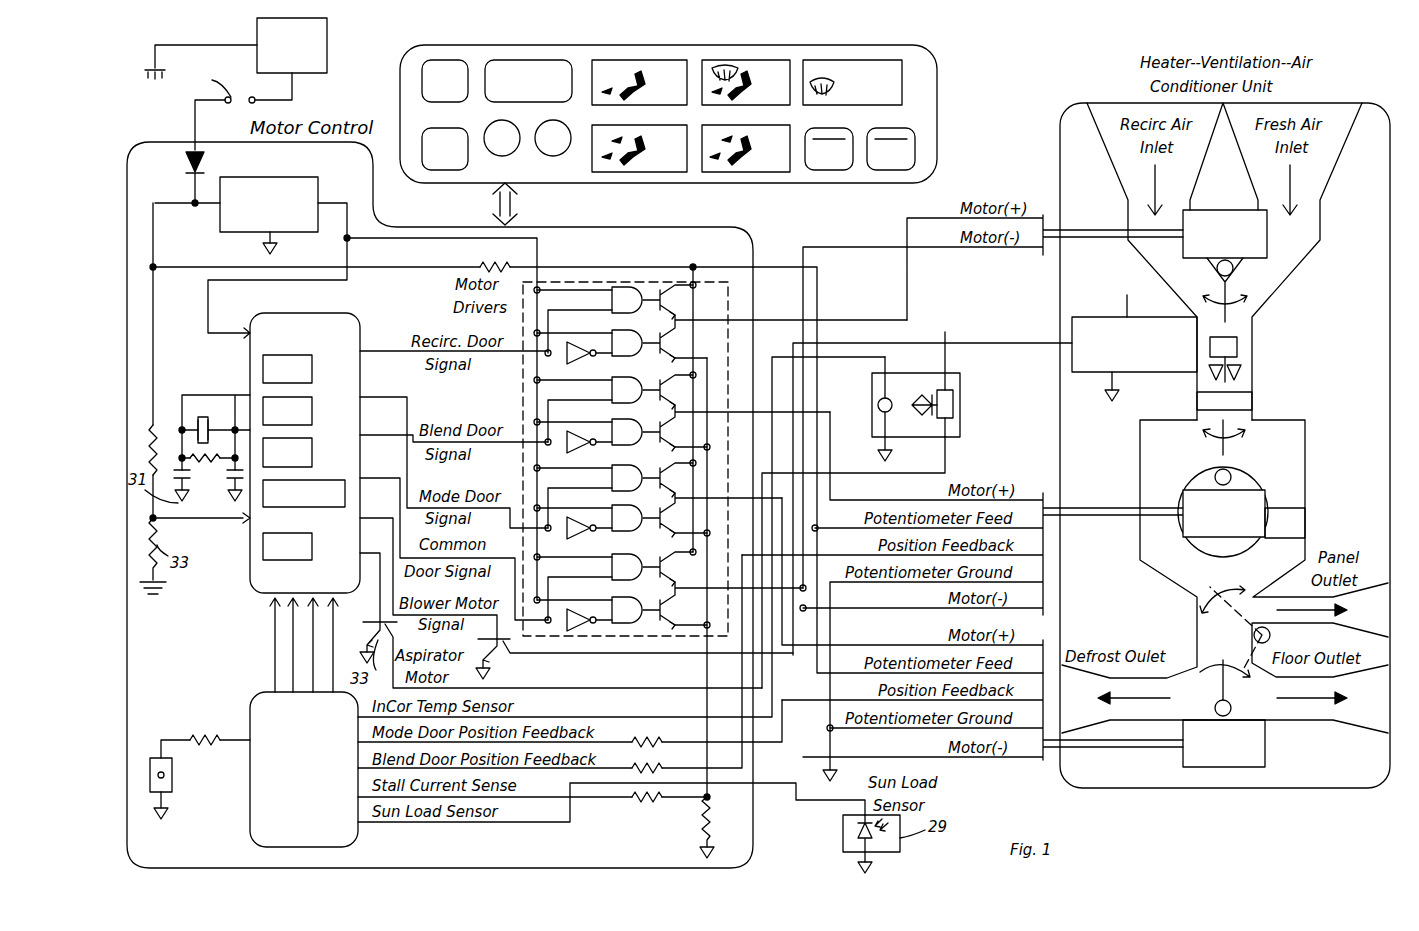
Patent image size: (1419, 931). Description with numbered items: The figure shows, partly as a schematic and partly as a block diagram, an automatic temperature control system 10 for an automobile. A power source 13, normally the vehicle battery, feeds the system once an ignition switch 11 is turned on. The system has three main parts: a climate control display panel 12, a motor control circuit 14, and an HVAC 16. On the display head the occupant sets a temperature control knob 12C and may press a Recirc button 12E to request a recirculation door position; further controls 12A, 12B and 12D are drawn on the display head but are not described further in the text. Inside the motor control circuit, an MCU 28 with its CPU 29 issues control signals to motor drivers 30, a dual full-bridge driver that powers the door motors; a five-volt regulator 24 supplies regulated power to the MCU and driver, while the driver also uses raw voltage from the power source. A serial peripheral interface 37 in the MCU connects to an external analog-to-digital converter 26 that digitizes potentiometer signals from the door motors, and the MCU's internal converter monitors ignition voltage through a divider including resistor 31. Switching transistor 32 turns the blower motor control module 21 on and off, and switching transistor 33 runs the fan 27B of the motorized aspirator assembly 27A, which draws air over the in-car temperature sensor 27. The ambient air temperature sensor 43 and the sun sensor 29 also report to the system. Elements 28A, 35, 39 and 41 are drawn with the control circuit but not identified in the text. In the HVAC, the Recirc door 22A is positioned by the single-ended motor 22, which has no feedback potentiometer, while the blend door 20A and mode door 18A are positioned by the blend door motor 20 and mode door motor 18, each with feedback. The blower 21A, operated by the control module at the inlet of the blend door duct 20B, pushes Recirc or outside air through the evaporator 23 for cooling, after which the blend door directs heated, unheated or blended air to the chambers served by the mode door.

The ATC system 10 is at (1082, 38).
The ignition switch 11 is at (242, 107).
The climate control display panel 12 is at (697, 116).
The panel mode button 12A is at (655, 172).
The defrost mode button 12B is at (902, 68).
The temperature control knob 12C is at (565, 152).
The air conditioning button 12D is at (830, 170).
The Recirc button 12E is at (915, 146).
The power source 13 is at (323, 34).
The motor control circuit 14 is at (438, 218).
The HVAC 16 is at (1060, 268).
The mode door motor 18 is at (1265, 752).
The mode door 18A is at (1220, 664).
The blend door motor 20 is at (1192, 492).
The blend door 20A is at (1313, 458).
The blend door duct 20B is at (1140, 452).
The blower motor control module 21 is at (1148, 372).
The blower motor 21A is at (1260, 350).
The outside air/Recirc air motor 22 is at (1267, 236).
The Recirc door 22A is at (1295, 312).
The evaporator 23 is at (1252, 402).
The five-volt regulator 24 is at (300, 186).
The analog-to-digital converter 26 is at (250, 718).
The in-car temperature sensor 27 is at (937, 377).
The motorized aspirator assembly 27A is at (960, 385).
The fan 27B is at (925, 425).
The MCU 28 is at (358, 318).
The crystal oscillator circuit 28A is at (203, 415).
The sun sensor 29 is at (312, 367).
The motor drivers 30 is at (612, 283).
The voltage divider network resistor 31 is at (312, 408).
The NPN switching transistor 32 is at (497, 648).
The NPN switching transistor 33 is at (312, 452).
The EEPROM 35 is at (330, 508).
The serial peripheral interface 37 is at (312, 551).
The stall current sense resistor 39 is at (702, 828).
The resistor 41 is at (635, 800).
The ambient air temperature sensor 43 is at (161, 758).